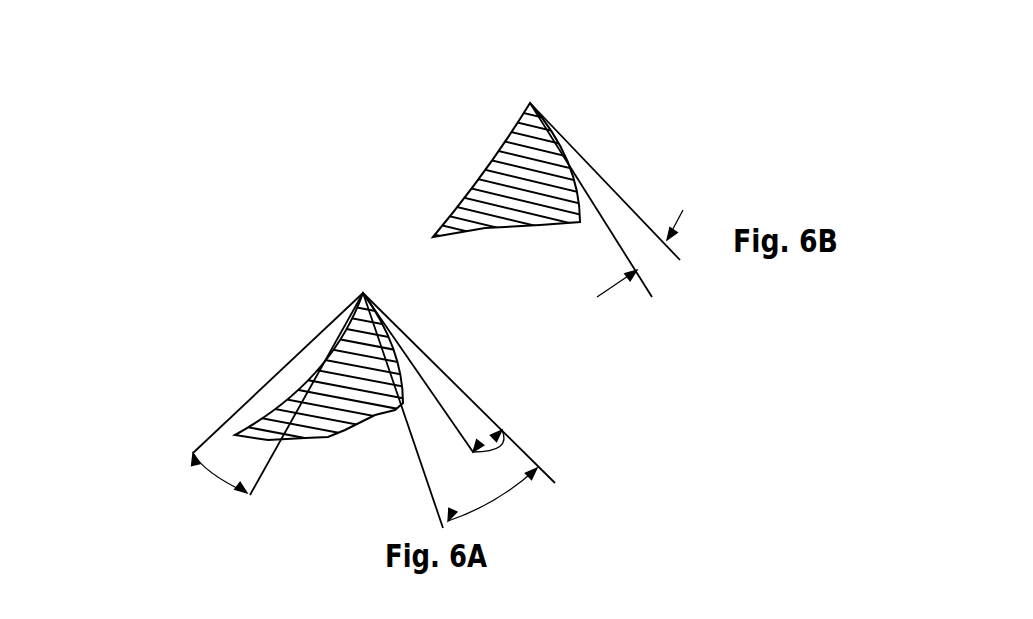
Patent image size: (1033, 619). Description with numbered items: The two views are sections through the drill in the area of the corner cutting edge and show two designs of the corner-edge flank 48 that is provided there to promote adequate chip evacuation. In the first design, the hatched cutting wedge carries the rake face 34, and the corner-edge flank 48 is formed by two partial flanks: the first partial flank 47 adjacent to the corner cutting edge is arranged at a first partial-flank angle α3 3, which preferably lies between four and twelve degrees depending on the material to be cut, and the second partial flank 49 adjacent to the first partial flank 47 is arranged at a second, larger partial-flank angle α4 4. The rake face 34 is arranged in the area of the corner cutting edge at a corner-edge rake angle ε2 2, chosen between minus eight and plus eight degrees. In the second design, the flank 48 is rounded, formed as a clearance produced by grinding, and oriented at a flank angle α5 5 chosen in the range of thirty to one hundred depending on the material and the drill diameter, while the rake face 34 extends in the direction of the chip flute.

In FIG. 6A, the rake face 34 is at (340, 322).
In FIG. 6B, the rake face 34 is at (525, 103).
In FIG. 6A, the first partial flank 47 is at (380, 307).
In FIG. 6B, the corner-edge flank 48 is at (567, 148).
In FIG. 6A, the second partial flank 49 is at (400, 380).
In FIG. 6A, the corner-edge rake angle ε 2 is at (212, 475).
In FIG. 6A, the first partial-flank angle α 3 is at (507, 446).
In FIG. 6A, the second partial-flank angle α 4 is at (497, 502).
In FIG. 6B, the flank angle α 5 is at (680, 222).